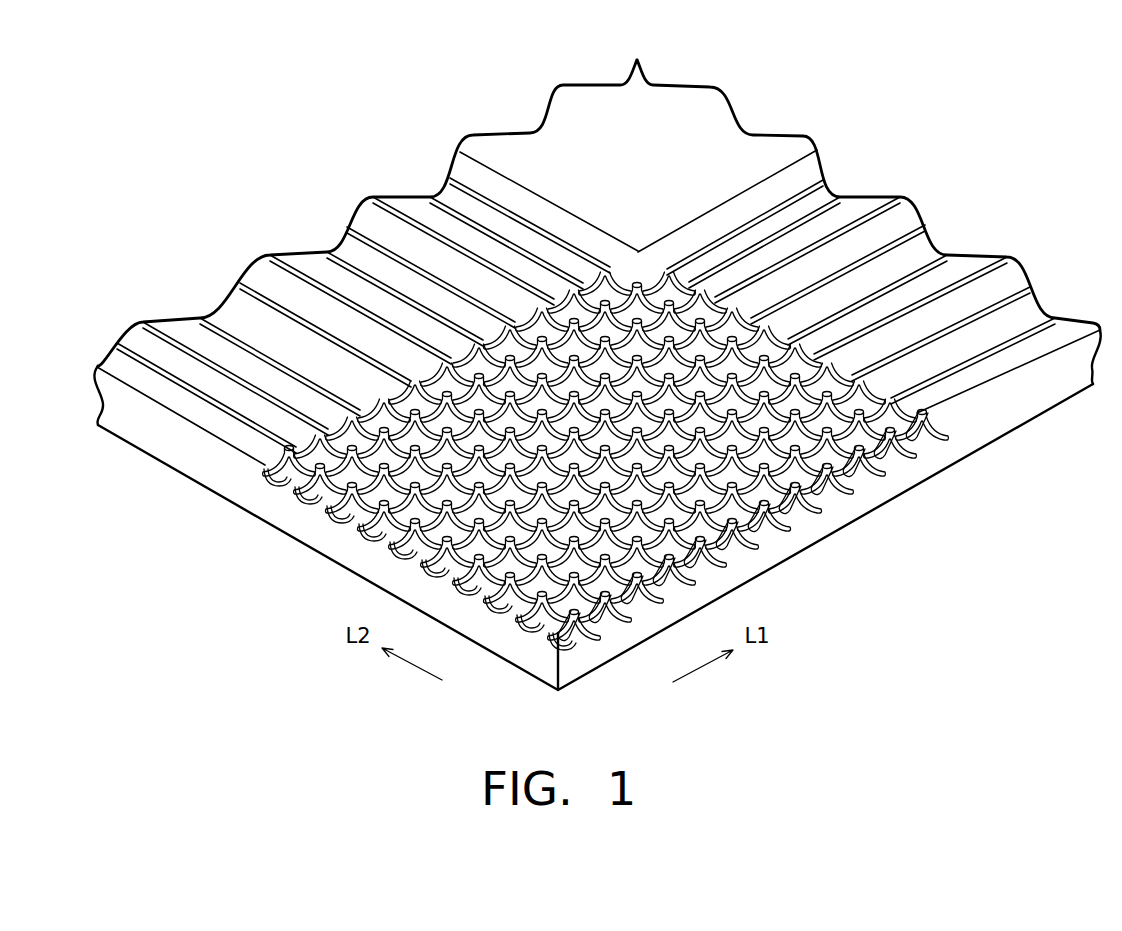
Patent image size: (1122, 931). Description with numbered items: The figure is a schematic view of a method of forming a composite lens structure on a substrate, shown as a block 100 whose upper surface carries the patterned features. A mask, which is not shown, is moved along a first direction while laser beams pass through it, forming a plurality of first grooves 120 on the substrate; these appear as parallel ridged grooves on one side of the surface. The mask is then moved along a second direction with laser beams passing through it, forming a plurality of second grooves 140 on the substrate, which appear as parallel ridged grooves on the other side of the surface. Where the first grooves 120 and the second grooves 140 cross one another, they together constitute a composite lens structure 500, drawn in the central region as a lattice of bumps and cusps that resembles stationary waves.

The substrate block 100 is at (862, 494).
The first grooves 120 is at (897, 267).
The second grooves 140 is at (477, 213).
The composite lens structure 500 is at (658, 281).